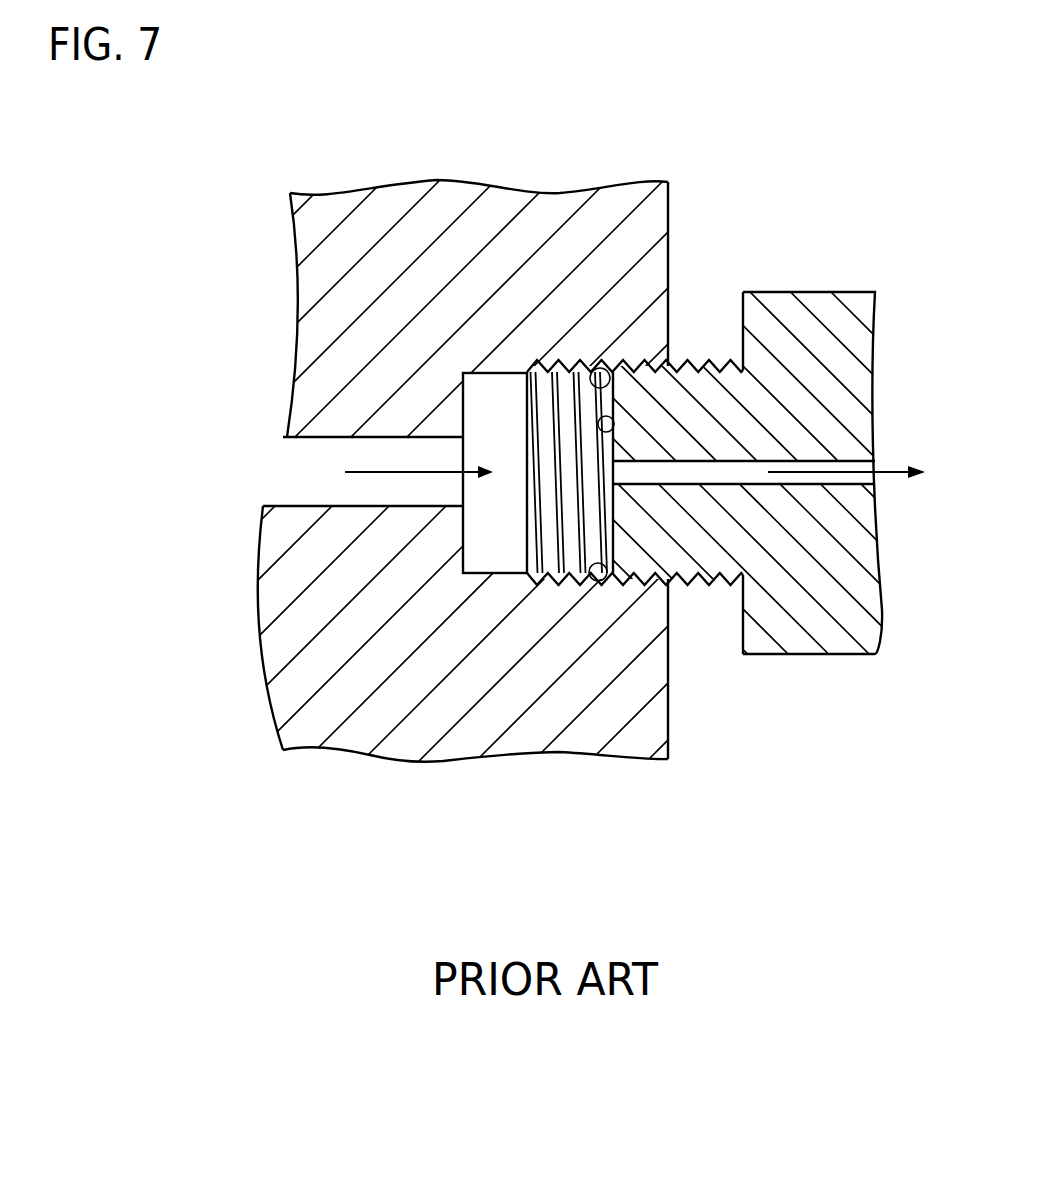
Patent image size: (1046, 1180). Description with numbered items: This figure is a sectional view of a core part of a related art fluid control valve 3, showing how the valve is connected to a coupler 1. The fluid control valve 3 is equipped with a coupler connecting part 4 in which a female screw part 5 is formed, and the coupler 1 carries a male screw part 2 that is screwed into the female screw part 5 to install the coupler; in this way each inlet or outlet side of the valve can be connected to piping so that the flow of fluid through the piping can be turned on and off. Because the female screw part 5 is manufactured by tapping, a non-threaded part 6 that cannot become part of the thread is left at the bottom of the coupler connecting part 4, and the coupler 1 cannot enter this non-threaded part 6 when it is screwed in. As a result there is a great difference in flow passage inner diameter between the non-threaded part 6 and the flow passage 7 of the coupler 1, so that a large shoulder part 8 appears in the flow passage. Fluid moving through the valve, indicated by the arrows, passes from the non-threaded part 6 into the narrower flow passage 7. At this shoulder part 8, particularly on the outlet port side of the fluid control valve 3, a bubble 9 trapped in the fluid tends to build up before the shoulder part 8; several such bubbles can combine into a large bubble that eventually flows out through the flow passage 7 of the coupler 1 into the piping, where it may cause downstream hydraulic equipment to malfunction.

The coupler 1 is at (851, 290).
The male screw part 2 is at (688, 362).
The fluid control valve 3 is at (404, 207).
The coupler connecting part 4 is at (577, 605).
The female screw part 5 is at (603, 593).
The non-threaded part 6 is at (504, 548).
The flow passage 7 is at (722, 487).
The shoulder part 8 is at (614, 437).
The bubble 9 is at (600, 370).